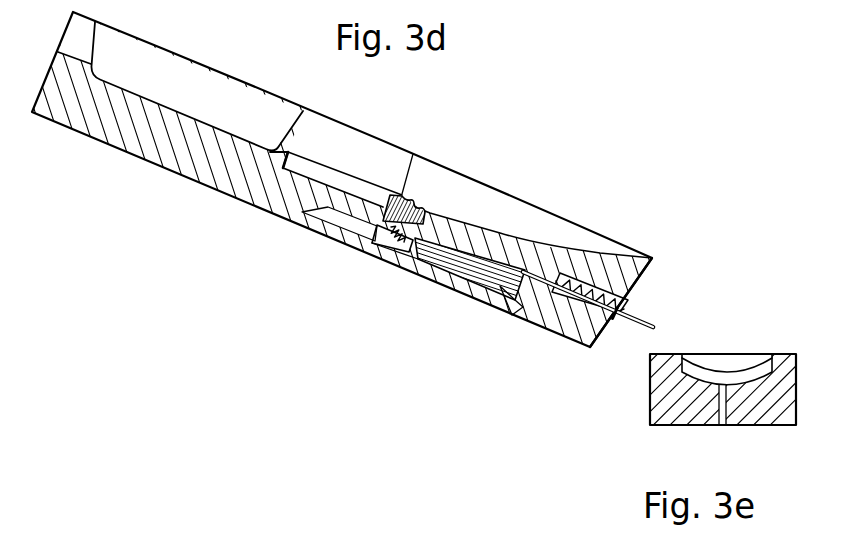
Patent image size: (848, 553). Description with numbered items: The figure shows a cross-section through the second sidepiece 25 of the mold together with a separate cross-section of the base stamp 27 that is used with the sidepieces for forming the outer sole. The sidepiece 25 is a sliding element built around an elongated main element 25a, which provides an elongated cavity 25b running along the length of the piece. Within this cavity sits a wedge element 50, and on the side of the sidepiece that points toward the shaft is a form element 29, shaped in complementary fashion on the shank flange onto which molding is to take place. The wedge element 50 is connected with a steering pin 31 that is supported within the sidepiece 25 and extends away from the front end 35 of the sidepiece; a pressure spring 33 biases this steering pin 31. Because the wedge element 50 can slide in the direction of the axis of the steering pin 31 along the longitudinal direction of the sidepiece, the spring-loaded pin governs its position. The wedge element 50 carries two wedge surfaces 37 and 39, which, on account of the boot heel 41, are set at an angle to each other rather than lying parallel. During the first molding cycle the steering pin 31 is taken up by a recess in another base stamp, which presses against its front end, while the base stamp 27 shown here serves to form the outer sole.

In FIG. 3d, the sidepiece 25 is at (85, 142).
In FIG. 3d, the elongated main element 25a is at (165, 145).
In FIG. 3d, the elongated cavity 25b is at (348, 228).
In FIG. 3e, the base stamp 27 is at (755, 415).
In FIG. 3d, the form element 29 is at (423, 208).
In FIG. 3d, the steering pin 31 is at (655, 323).
In FIG. 3d, the pressure spring 33 is at (585, 290).
In FIG. 3d, the front end 35 is at (650, 267).
In FIG. 3d, the wedge surface 37 is at (440, 300).
In FIG. 3d, the wedge surface 39 is at (382, 220).
In FIG. 3d, the boot heel 41 is at (426, 262).
In FIG. 3d, the wedge element 50 is at (490, 312).